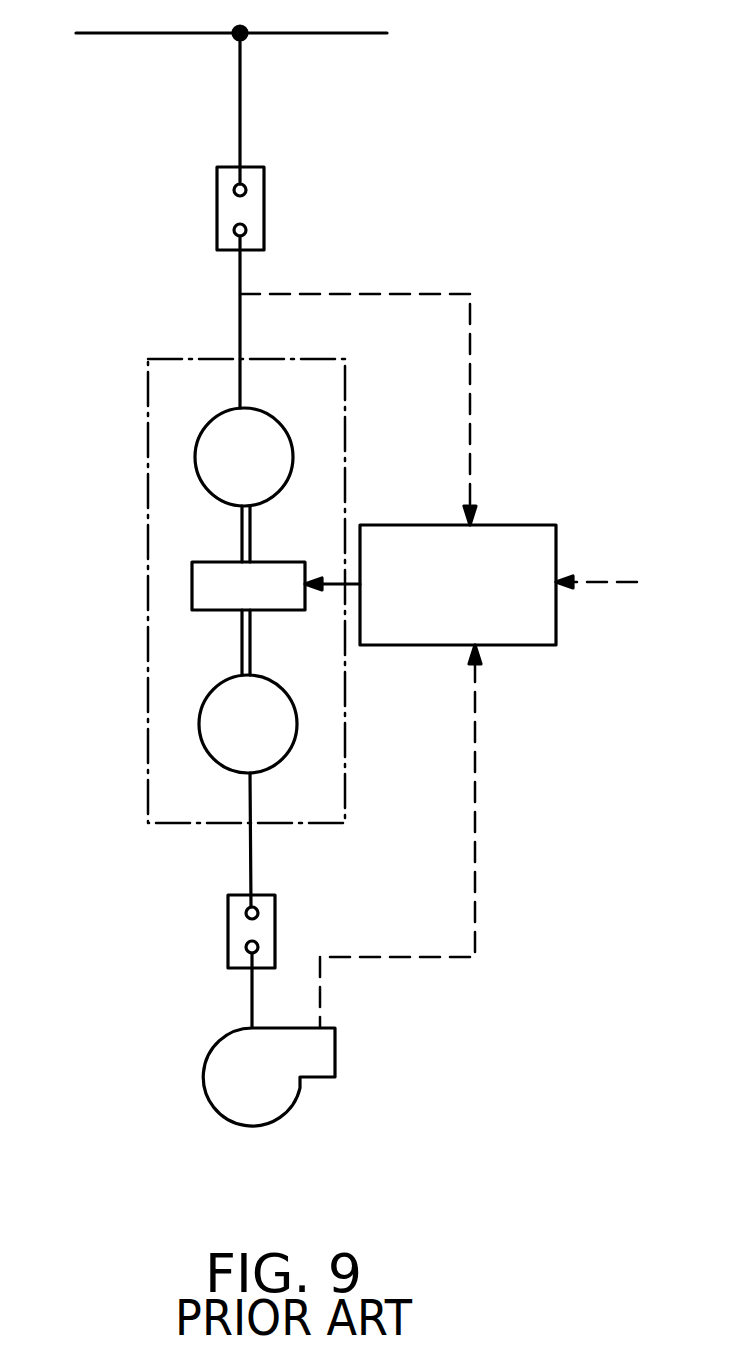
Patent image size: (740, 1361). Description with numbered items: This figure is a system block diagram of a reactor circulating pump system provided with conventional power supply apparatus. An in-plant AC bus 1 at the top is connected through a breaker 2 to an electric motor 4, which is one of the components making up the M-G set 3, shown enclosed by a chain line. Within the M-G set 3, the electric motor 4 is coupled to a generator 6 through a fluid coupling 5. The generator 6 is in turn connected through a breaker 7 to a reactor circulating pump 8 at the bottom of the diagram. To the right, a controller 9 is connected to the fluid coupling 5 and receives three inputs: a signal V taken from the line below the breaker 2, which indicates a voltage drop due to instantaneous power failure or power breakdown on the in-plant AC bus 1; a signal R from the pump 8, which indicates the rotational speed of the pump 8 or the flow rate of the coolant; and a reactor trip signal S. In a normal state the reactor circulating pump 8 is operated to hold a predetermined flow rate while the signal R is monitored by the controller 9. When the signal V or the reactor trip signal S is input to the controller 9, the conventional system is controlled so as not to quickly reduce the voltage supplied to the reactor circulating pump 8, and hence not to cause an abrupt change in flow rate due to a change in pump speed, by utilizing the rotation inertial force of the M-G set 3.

The in-plant AC bus 1 is at (330, 32).
The breaker 2 is at (264, 222).
The M-G set 3 is at (148, 413).
The electric motor 4 is at (292, 440).
The fluid coupling 5 is at (290, 561).
The generator 6 is at (286, 690).
The breaker 7 is at (228, 930).
The reactor circulating pump 8 is at (205, 1080).
The controller 9 is at (530, 525).
The signal V is at (470, 382).
The signal R is at (480, 783).
The reactor trip signal S is at (606, 582).